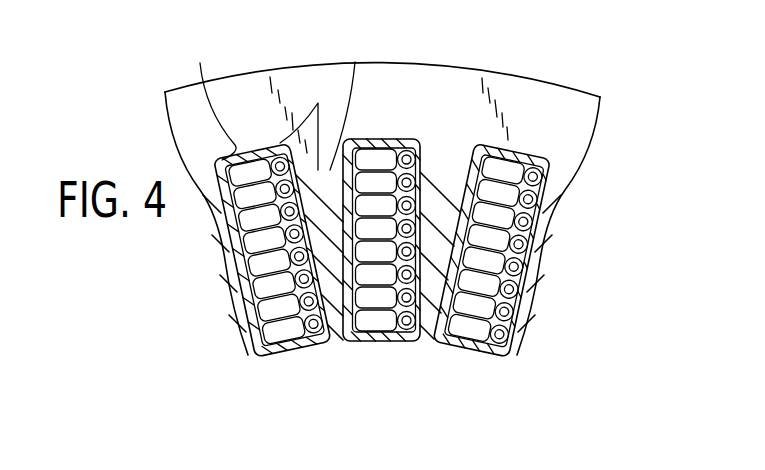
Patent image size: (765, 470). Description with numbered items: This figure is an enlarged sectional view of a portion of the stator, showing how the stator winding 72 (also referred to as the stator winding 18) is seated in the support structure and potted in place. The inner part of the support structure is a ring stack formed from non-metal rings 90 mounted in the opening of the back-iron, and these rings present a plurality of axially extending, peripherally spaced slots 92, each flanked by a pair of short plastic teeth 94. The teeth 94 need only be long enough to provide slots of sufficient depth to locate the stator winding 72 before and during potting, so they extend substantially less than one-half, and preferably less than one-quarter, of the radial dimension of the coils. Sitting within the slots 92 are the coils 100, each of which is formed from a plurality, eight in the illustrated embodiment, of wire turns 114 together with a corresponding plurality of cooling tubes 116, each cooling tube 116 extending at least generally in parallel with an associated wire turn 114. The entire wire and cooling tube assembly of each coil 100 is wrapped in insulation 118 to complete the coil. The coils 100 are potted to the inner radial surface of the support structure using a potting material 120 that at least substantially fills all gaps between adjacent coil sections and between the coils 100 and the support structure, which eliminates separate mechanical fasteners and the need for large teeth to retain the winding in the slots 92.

The stator winding 18 is at (565, 68).
The stator winding 72 is at (272, 371).
The non-metal ring 90 is at (572, 100).
The slot 92 is at (523, 155).
The tooth 94 is at (442, 158).
The coil 100 is at (387, 128).
The wire turn 114 is at (248, 308).
The cooling tube 116 is at (608, 143).
The insulation 118 is at (600, 215).
The potting material 120 is at (355, 62).